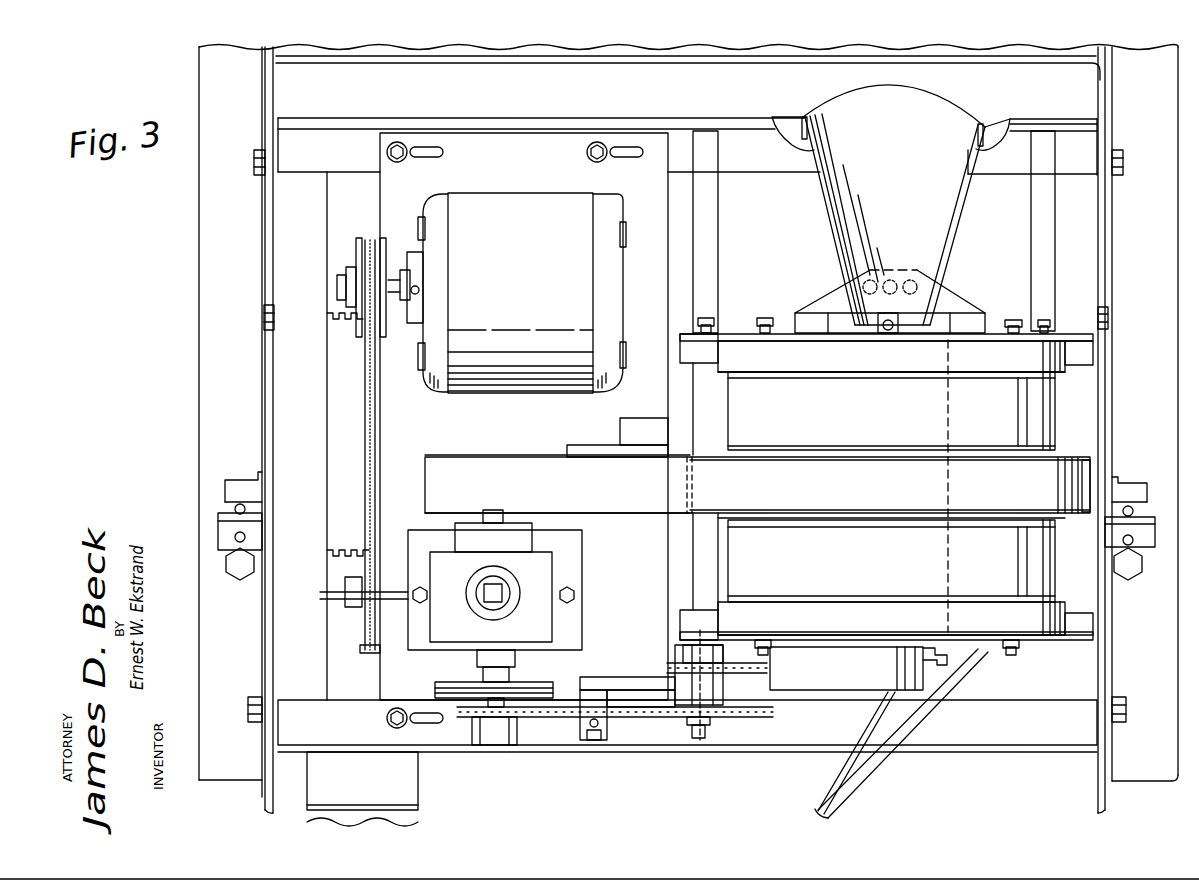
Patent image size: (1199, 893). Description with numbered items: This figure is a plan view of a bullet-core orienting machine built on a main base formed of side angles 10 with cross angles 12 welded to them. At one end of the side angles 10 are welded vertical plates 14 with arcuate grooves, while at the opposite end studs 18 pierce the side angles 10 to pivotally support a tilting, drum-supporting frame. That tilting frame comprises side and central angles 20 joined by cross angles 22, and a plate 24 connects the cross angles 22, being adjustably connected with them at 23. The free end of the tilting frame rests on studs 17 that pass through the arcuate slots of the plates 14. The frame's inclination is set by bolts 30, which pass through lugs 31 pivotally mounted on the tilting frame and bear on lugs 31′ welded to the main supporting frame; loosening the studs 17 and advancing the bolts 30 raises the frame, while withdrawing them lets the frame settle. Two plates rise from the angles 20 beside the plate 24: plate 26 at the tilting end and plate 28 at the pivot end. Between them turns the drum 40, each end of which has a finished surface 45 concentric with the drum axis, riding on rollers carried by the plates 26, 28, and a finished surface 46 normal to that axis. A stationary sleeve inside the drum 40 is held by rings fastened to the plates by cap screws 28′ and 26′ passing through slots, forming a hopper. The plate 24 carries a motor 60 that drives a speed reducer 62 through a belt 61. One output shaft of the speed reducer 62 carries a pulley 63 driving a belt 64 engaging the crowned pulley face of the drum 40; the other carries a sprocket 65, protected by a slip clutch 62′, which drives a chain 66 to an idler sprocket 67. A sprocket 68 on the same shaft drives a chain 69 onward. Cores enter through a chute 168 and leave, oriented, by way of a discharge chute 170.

The side angles 10 is at (204, 364).
The cross angles 12 is at (606, 56).
The vertical plates 14 is at (270, 630).
The studs 17 is at (246, 710).
The studs 18 is at (254, 162).
The side and central angles 20 is at (286, 240).
The cross angles 22 is at (349, 174).
The adjustable connection 23 is at (397, 160).
The plate 24 is at (524, 416).
The plate 26 is at (1067, 654).
The cap screws 26′ is at (766, 656).
The plate 28 is at (720, 330).
The cap screws 28′ is at (765, 326).
The bolts 30 is at (225, 503).
The lugs 31 is at (218, 530).
The lugs 31′ is at (241, 480).
The drum 40 is at (891, 488).
The finished surface 45 is at (934, 362).
The finished surface 46 is at (964, 326).
The motor 60 is at (507, 293).
The belt 61 is at (374, 420).
The speed reducer 62 is at (458, 570).
The slip clutch 62′ is at (437, 680).
The pulley 63 is at (543, 457).
The belt 64 is at (705, 507).
The sprocket 65 is at (470, 719).
The chain 66 is at (557, 719).
The idler sprocket 67 is at (738, 720).
The sprocket 68 is at (685, 663).
The chain 69 is at (735, 664).
The chute 168 is at (832, 223).
The discharge chute 170 is at (910, 719).